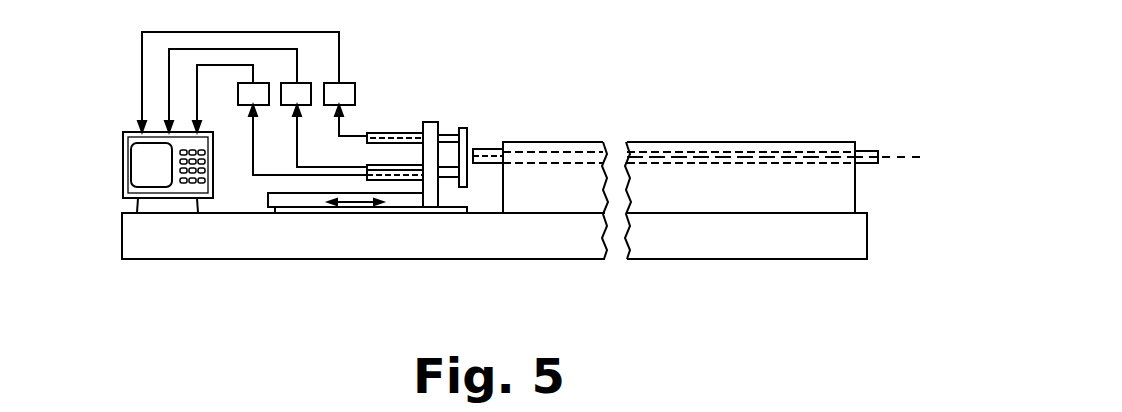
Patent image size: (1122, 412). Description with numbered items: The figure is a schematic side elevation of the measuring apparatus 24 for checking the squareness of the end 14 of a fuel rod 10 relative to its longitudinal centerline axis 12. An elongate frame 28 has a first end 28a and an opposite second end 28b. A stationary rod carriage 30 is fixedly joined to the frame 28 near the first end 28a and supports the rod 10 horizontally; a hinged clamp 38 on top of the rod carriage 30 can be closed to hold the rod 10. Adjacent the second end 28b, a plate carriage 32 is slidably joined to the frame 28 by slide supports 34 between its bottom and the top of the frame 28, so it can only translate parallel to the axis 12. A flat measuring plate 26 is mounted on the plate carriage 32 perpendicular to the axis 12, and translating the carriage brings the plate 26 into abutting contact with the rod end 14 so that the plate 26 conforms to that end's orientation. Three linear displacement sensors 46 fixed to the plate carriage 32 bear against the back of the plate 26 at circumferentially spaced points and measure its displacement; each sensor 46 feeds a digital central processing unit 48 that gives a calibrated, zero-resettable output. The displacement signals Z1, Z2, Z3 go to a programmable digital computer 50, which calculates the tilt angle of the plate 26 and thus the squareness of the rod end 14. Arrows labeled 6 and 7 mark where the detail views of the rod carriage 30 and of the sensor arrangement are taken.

The fuel rod 10 is at (867, 142).
The longitudinal centerline axis 12 is at (905, 151).
The rod end 14 is at (478, 143).
The apparatus 24 is at (702, 131).
The measuring plate 26 is at (470, 128).
The elongate frame 28 is at (648, 262).
The frame first end 28a is at (757, 260).
The frame second end 28b is at (222, 259).
The rod carriage 30 is at (857, 187).
The plate carriage 32 is at (428, 122).
The slide supports 34 is at (312, 213).
The clamp 38 is at (762, 142).
The linear displacement sensors 46 is at (397, 162).
The digital central processing unit 48 is at (238, 92).
The programmable digital computer 50 is at (122, 138).
The z1 signal Z1 is at (282, 32).
The z2 signal Z2 is at (243, 49).
The z3 signal Z3 is at (206, 65).
The section line 6 is at (525, 118).
The section line 7 is at (475, 118).